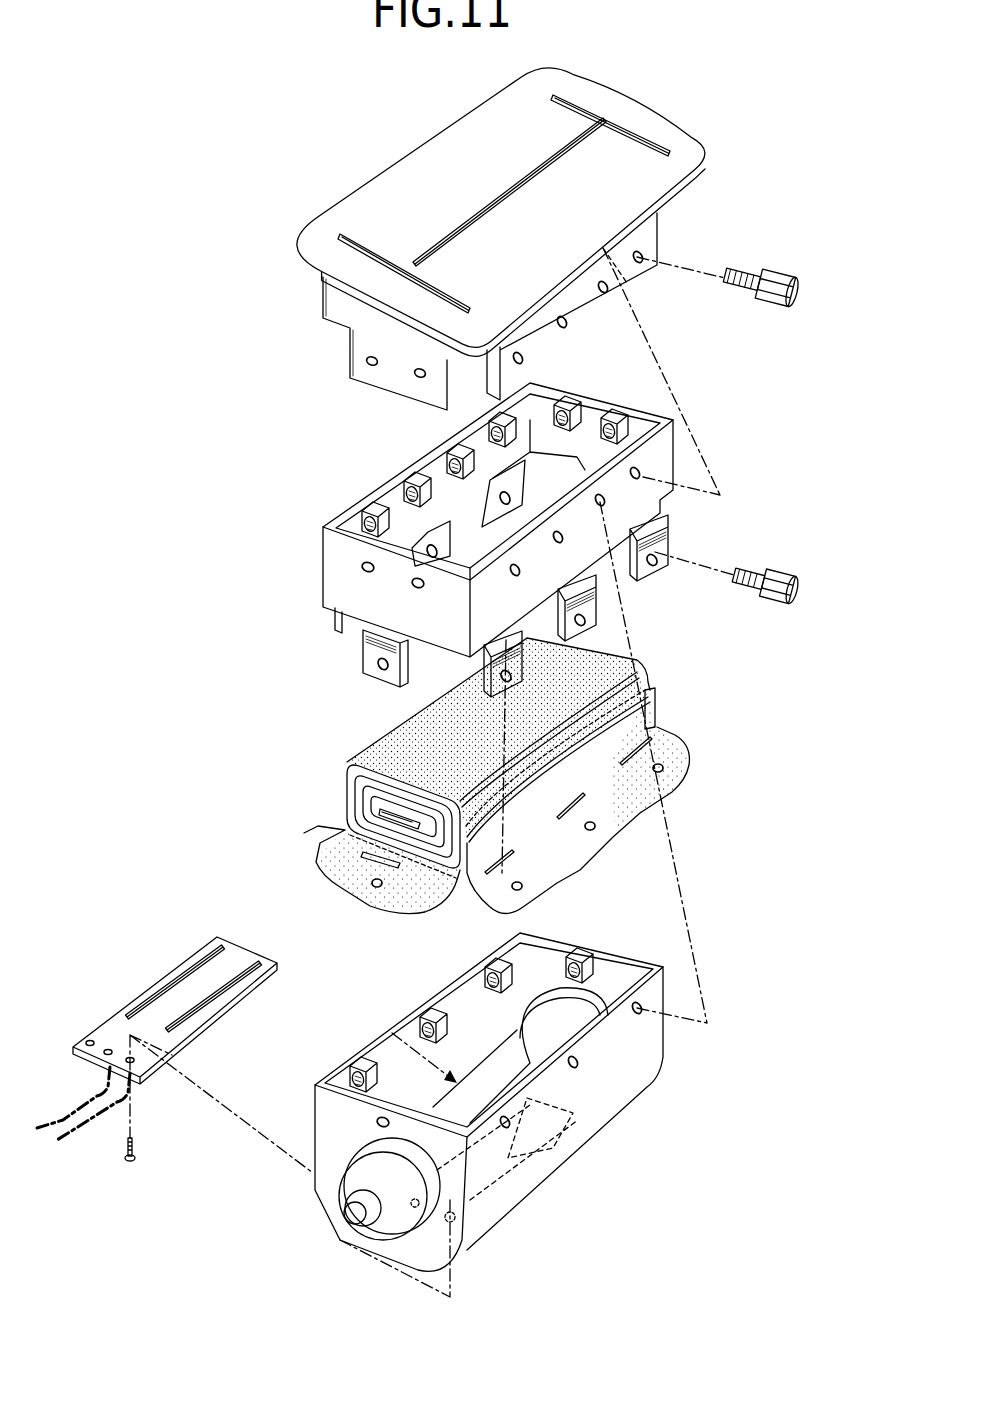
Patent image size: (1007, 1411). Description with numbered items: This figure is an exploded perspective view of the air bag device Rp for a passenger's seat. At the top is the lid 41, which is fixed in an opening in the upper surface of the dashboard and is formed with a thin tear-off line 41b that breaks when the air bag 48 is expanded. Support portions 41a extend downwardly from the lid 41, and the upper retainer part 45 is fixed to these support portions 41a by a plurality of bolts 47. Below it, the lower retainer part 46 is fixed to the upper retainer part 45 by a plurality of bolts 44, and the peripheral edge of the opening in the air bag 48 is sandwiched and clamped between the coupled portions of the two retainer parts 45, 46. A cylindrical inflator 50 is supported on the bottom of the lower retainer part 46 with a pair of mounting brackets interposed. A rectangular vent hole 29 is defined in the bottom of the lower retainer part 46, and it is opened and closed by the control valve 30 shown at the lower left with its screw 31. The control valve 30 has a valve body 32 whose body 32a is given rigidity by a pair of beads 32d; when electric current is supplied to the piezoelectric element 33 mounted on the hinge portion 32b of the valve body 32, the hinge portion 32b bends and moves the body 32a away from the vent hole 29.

The air bag device for the passenger's seat Rp is at (228, 462).
The lid 41 is at (699, 128).
The support portions 41a is at (390, 378).
The thin tear-off line 41b is at (502, 190).
The bolts 47 is at (754, 290).
The bolts 44 is at (765, 586).
The upper retainer part 45 is at (333, 581).
The air bag 48 is at (399, 740).
The lower retainer part 46 is at (640, 1050).
The cylindrical inflator 50 is at (392, 1033).
The rectangular vent hole 29 is at (570, 1162).
The control valve 30 is at (200, 920).
The valve body 32 is at (160, 978).
The body 32a is at (231, 960).
The hinge portion 32b is at (180, 1048).
The beads 32d is at (149, 1000).
The piezoelectric element 33 is at (156, 1070).
The screw 31 is at (124, 1150).